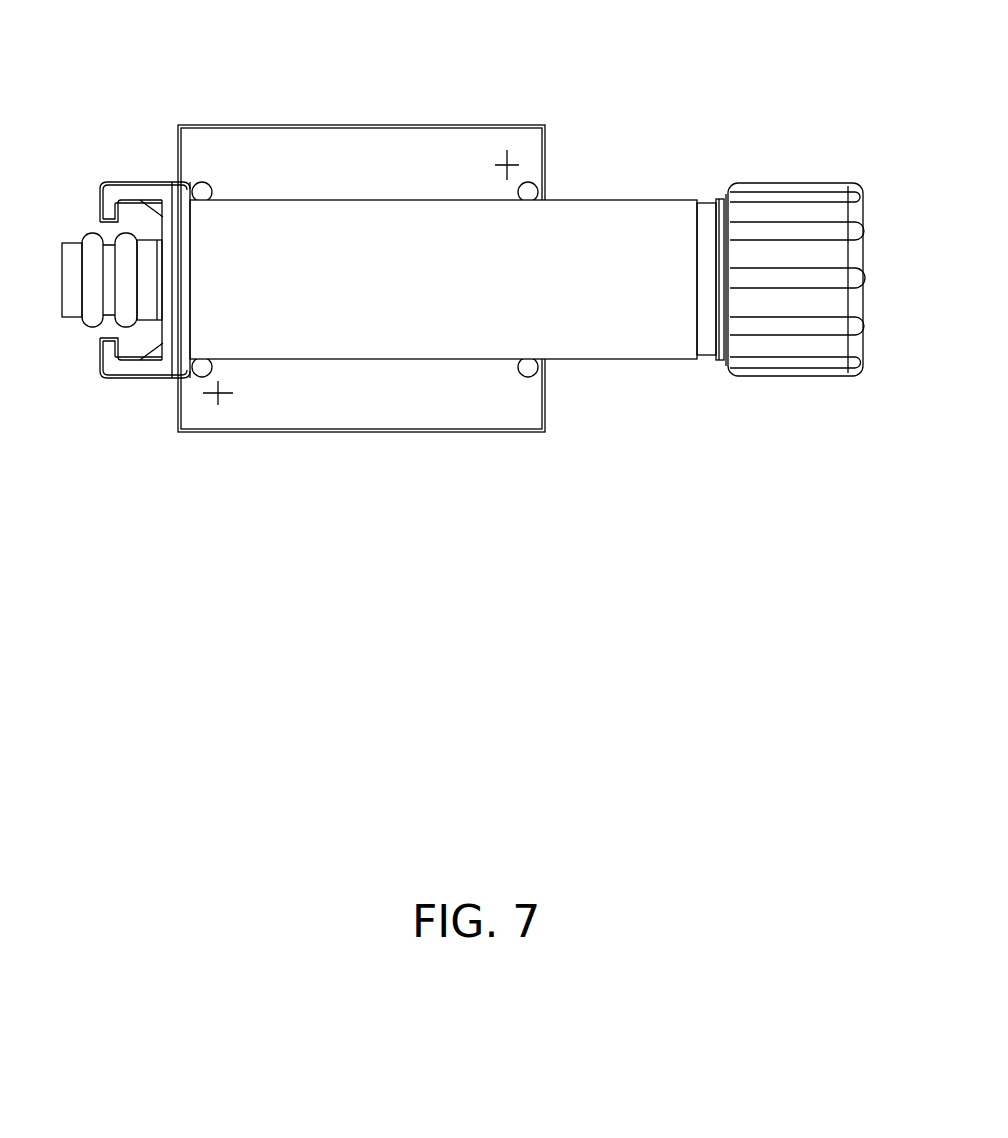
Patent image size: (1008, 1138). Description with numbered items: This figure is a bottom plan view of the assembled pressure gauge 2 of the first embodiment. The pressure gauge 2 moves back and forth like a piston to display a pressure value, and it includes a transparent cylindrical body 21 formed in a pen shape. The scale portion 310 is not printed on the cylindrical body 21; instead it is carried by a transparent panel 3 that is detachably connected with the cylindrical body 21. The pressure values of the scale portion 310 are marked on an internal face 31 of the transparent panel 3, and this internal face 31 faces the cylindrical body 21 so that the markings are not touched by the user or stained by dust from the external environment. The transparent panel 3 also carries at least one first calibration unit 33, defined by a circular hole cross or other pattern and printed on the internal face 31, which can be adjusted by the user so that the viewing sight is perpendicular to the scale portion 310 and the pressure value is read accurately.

The pressure gauge 2 is at (463, 344).
The cylindrical body 21 is at (642, 352).
The transparent panel 3 is at (384, 218).
The internal face 31 is at (538, 143).
The first calibration unit 33 is at (513, 142).
The scale portion 310 is at (279, 153).